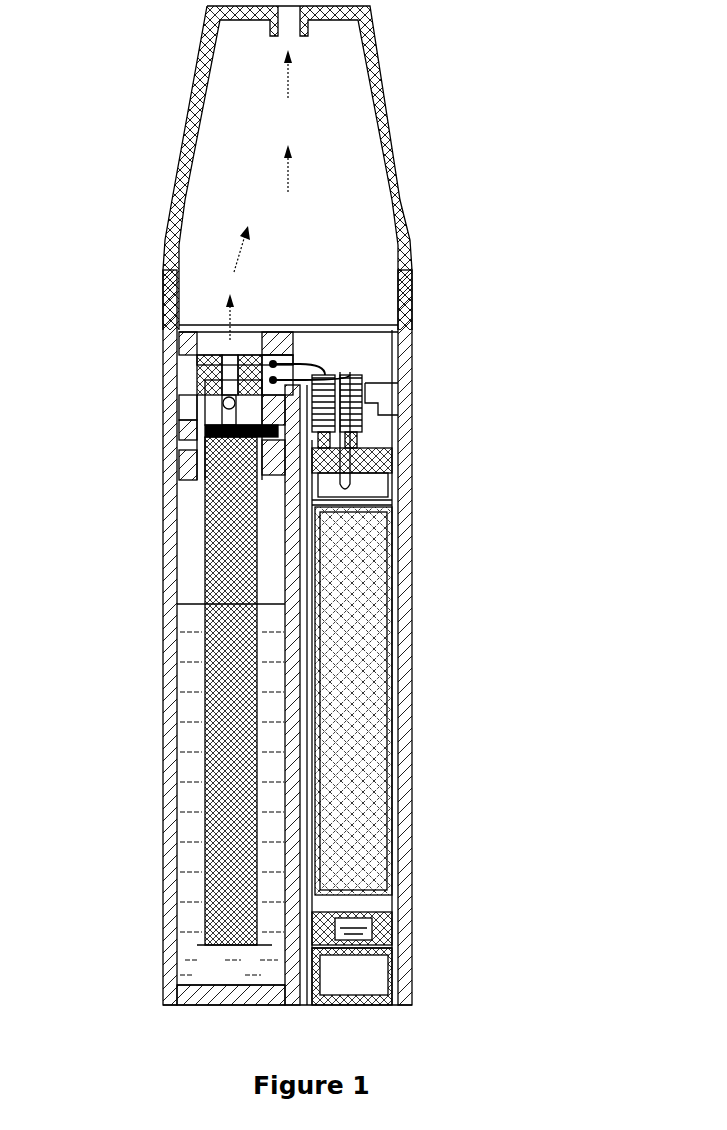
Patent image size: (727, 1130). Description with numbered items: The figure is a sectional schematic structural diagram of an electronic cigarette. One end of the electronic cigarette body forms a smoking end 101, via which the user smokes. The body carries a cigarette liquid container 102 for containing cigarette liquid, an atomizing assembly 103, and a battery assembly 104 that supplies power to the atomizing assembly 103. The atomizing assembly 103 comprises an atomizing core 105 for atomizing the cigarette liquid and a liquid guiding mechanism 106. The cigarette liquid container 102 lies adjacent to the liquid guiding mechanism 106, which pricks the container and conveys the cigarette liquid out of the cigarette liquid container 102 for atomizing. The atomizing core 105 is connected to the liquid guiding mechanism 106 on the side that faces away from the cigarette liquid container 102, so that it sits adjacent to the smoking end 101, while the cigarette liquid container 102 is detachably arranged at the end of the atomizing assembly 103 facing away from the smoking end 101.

The smoking end 101 is at (340, 133).
The cigarette liquid container 102 is at (175, 628).
The atomizing assembly 103 is at (220, 384).
The battery assembly 104 is at (360, 667).
The atomizing core 105 is at (218, 408).
The liquid guiding mechanism 106 is at (232, 752).